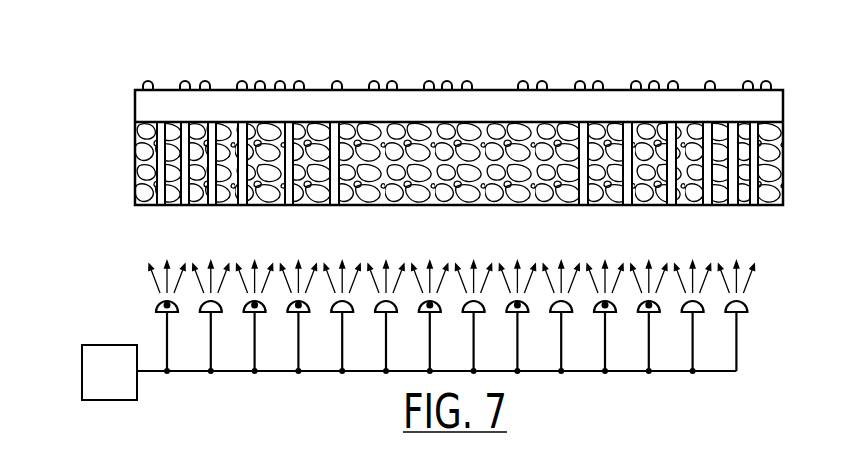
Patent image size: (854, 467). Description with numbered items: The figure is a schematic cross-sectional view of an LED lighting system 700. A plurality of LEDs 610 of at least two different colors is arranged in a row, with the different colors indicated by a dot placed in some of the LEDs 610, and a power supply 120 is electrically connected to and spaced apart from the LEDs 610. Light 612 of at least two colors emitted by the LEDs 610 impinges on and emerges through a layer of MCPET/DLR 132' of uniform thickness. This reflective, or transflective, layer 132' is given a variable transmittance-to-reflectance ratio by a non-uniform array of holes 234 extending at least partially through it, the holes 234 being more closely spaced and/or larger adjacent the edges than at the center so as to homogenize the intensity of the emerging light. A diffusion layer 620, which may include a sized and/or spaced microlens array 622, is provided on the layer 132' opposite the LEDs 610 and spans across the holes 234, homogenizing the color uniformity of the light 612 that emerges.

The LED lighting system 700 is at (78, 108).
The diffusion layer 620 is at (133, 108).
The microlens array 622 is at (201, 83).
The layer of MCPET/DLR 132' is at (433, 163).
The non-uniform array of holes 234 is at (212, 207).
The light 612 is at (153, 282).
The LEDs 610 is at (158, 300).
The power supply 120 is at (127, 383).